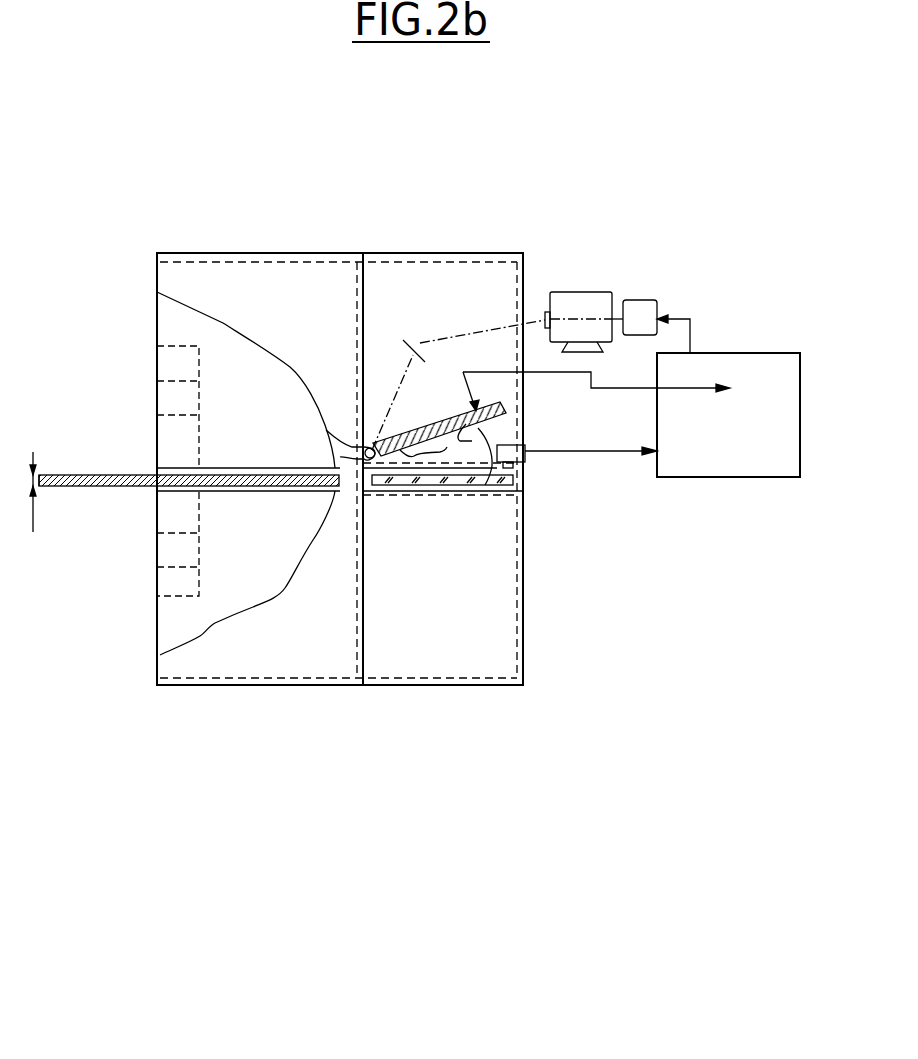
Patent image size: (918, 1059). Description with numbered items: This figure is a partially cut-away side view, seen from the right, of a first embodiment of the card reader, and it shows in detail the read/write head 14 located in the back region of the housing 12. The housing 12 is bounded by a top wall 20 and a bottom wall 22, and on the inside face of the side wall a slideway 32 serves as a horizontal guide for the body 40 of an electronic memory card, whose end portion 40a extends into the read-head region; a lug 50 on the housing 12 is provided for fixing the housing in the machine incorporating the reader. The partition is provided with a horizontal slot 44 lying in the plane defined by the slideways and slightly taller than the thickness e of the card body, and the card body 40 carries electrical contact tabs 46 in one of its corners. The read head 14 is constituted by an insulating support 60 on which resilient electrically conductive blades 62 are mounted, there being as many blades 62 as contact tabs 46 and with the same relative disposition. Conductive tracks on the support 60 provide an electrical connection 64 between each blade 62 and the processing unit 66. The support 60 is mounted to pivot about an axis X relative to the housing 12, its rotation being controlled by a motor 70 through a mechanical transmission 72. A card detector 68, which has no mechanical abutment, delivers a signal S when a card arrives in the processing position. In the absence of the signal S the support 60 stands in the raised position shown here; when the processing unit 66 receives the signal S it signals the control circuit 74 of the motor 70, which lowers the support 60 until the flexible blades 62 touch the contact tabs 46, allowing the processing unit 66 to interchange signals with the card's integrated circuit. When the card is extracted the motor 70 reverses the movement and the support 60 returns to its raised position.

The housing 12 is at (270, 250).
The read/write head 14 is at (440, 414).
The top wall 20 is at (322, 262).
The bottom wall 22 is at (280, 685).
The slideway 32 is at (281, 493).
The body of the electronic memory card 40 is at (117, 472).
The strip end portion 40a is at (513, 477).
The horizontal slot 44 is at (406, 490).
The electrical contact tabs 46 is at (480, 470).
The lug 50 is at (157, 366).
The insulating support 60 is at (420, 437).
The resilient electrically conductive blades 62 is at (446, 490).
The electrical connection 64 is at (644, 386).
The processing unit 66 is at (752, 452).
The card detector 68 is at (517, 448).
The motor 70 is at (578, 296).
The mechanical transmission 72 is at (464, 333).
The control circuit 74 is at (644, 298).
The signal S is at (591, 442).
The thickness of the card body e is at (40, 492).
The axis XX' X is at (328, 432).